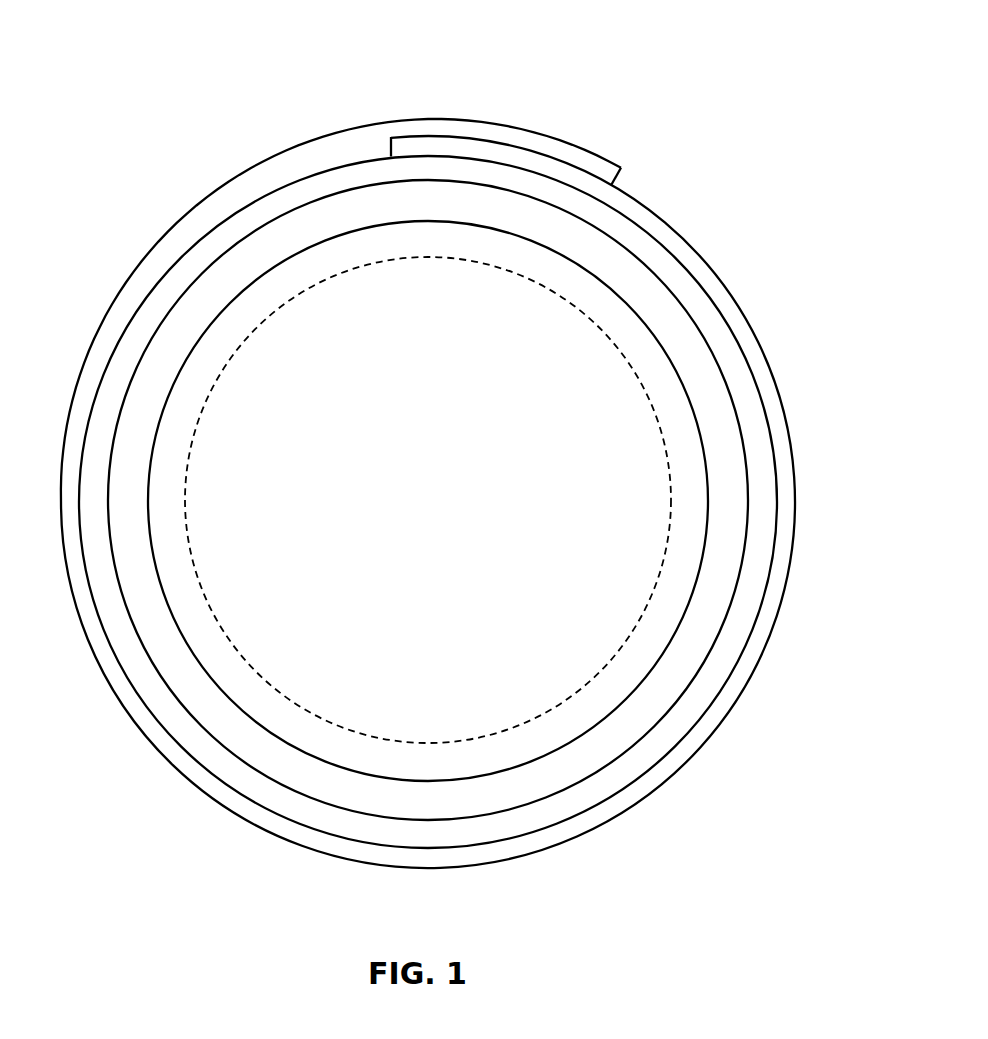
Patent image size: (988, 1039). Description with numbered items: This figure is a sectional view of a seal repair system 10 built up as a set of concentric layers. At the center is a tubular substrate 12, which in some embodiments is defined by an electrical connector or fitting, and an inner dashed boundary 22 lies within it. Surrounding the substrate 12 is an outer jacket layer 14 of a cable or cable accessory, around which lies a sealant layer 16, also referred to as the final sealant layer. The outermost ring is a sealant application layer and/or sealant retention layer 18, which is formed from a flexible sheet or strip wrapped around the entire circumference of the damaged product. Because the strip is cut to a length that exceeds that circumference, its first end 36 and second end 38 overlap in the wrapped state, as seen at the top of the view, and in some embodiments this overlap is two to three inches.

The seal repair system 10 is at (116, 53).
The substrate 12 is at (642, 300).
The outer jacket layer 14 is at (700, 377).
The sealant layer 16 is at (748, 403).
The sealant application layer and/or sealant retention layer 18 is at (795, 450).
The inner bore 22 is at (668, 547).
The first end 36 is at (389, 150).
The second end 38 is at (626, 173).